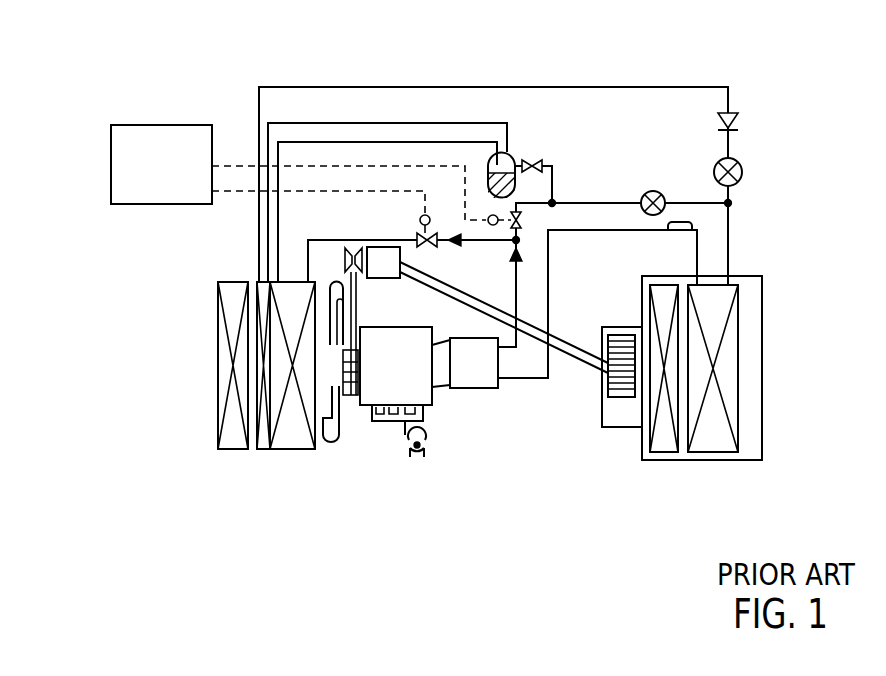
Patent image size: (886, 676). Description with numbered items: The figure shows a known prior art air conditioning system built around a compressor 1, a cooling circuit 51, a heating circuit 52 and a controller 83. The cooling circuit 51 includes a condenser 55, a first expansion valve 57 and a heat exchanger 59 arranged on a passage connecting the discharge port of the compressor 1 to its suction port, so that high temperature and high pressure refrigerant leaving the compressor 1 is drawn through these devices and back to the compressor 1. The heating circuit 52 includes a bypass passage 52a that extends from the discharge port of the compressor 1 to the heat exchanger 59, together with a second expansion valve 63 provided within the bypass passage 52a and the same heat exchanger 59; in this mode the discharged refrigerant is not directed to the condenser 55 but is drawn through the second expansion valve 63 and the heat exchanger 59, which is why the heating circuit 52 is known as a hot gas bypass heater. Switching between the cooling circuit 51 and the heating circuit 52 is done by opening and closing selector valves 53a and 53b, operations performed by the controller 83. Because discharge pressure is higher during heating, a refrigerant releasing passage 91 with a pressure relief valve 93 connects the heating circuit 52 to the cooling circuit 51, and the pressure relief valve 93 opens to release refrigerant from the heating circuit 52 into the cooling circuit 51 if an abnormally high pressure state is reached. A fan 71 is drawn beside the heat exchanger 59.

The compressor 1 is at (467, 383).
The cooling circuit 51 is at (447, 87).
The heating circuit 52 is at (607, 203).
The bypass passage 52a is at (702, 208).
The selector valve 53a is at (425, 237).
The selector valve 53b is at (527, 222).
The condenser 55 is at (293, 450).
The first expansion valve 57 is at (735, 158).
The heat exchanger 59 is at (740, 335).
The second expansion valve 63 is at (652, 192).
The fan 71 is at (663, 453).
The controller 83 is at (122, 177).
The refrigerant releasing passage 91 is at (555, 178).
The pressure relief valve 93 is at (530, 158).